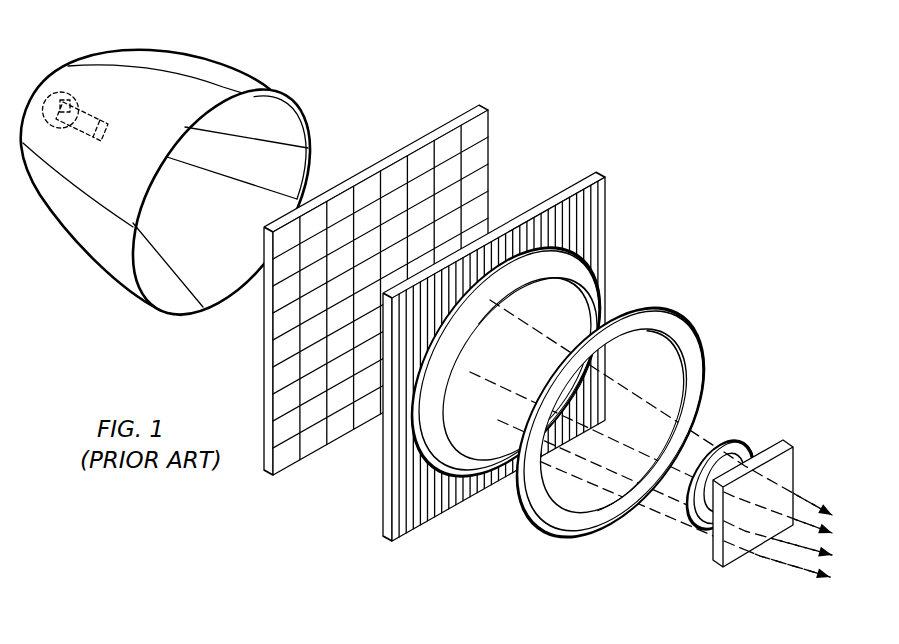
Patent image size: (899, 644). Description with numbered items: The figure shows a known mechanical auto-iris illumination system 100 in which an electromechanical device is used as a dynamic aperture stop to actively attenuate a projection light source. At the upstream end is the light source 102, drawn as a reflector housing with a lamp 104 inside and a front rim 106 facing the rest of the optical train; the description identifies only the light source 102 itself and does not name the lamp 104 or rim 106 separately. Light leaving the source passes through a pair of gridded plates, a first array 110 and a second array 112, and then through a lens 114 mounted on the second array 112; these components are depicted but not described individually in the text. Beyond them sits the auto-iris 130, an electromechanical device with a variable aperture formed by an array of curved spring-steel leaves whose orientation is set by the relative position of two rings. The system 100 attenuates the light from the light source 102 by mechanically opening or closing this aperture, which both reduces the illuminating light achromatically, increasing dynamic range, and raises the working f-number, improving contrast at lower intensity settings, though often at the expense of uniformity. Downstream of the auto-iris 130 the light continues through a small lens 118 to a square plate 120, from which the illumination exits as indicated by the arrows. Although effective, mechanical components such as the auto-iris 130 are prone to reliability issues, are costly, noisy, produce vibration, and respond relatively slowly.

The mechanical auto-iris illumination system 100 is at (604, 68).
The light source 102 is at (90, 253).
The lamp 104 is at (100, 104).
The reflector rim / aperture 106 is at (273, 100).
The fly-eye lens array (first) 110 is at (480, 103).
The fly-eye lens array (second) 112 is at (597, 172).
The condenser lens 114 is at (449, 478).
The auto-iris 130 is at (648, 307).
The relay lens 118 is at (745, 441).
The light valve / plate 120 is at (717, 567).